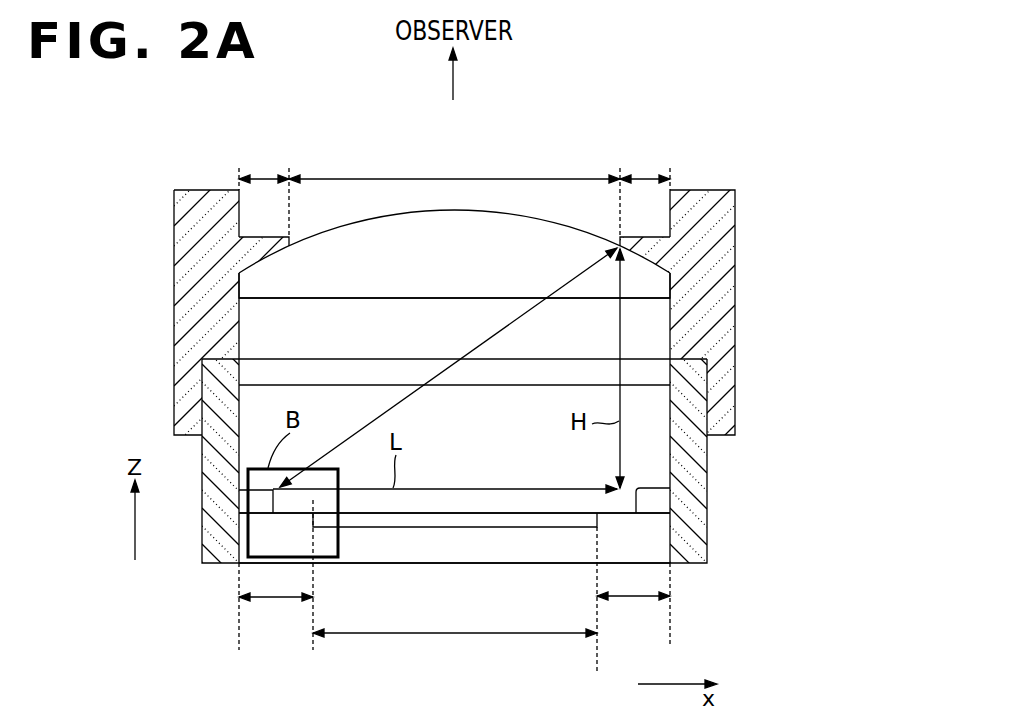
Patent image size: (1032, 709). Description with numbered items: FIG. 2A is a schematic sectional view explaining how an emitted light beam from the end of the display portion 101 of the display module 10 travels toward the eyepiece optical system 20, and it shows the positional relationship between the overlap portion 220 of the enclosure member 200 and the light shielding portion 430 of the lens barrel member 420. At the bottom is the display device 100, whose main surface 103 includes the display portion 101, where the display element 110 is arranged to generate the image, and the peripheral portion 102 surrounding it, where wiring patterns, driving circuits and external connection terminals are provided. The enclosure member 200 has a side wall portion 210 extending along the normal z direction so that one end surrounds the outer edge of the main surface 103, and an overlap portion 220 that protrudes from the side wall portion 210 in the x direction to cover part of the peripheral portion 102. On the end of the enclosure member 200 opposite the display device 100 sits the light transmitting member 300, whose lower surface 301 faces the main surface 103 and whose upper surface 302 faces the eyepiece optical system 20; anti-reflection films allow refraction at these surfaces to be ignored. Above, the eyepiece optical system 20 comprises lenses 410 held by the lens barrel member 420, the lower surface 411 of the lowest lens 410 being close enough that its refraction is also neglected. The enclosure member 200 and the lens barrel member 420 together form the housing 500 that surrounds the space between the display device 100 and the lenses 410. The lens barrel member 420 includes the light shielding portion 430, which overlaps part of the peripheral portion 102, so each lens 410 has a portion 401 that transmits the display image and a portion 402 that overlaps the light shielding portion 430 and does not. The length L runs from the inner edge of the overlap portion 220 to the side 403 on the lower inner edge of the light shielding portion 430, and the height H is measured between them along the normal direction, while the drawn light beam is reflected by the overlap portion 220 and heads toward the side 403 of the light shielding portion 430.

The display module 10 is at (513, 500).
The eyepiece optical system 20 is at (555, 339).
The display device 100 is at (513, 564).
The display portion 101 is at (455, 635).
The peripheral portion 102 is at (275, 599).
The main surface 103 is at (463, 512).
The display element 110 is at (384, 520).
The enclosure member 200 is at (482, 463).
The side wall portion 210 is at (688, 458).
The overlap portion 220 is at (650, 503).
The light transmitting member 300 is at (507, 390).
The lower surface 301 is at (517, 386).
The upper surface 302 is at (520, 358).
The portion which transmits a display image 401 is at (455, 177).
The portion which overlaps the light shielding portion 402 is at (262, 177).
The side 403 is at (618, 247).
The lens 410 is at (647, 287).
The lower surface 411 is at (390, 302).
The lens barrel member 420 is at (220, 317).
The light shielding portion 430 is at (258, 257).
The housing 500 is at (422, 315).